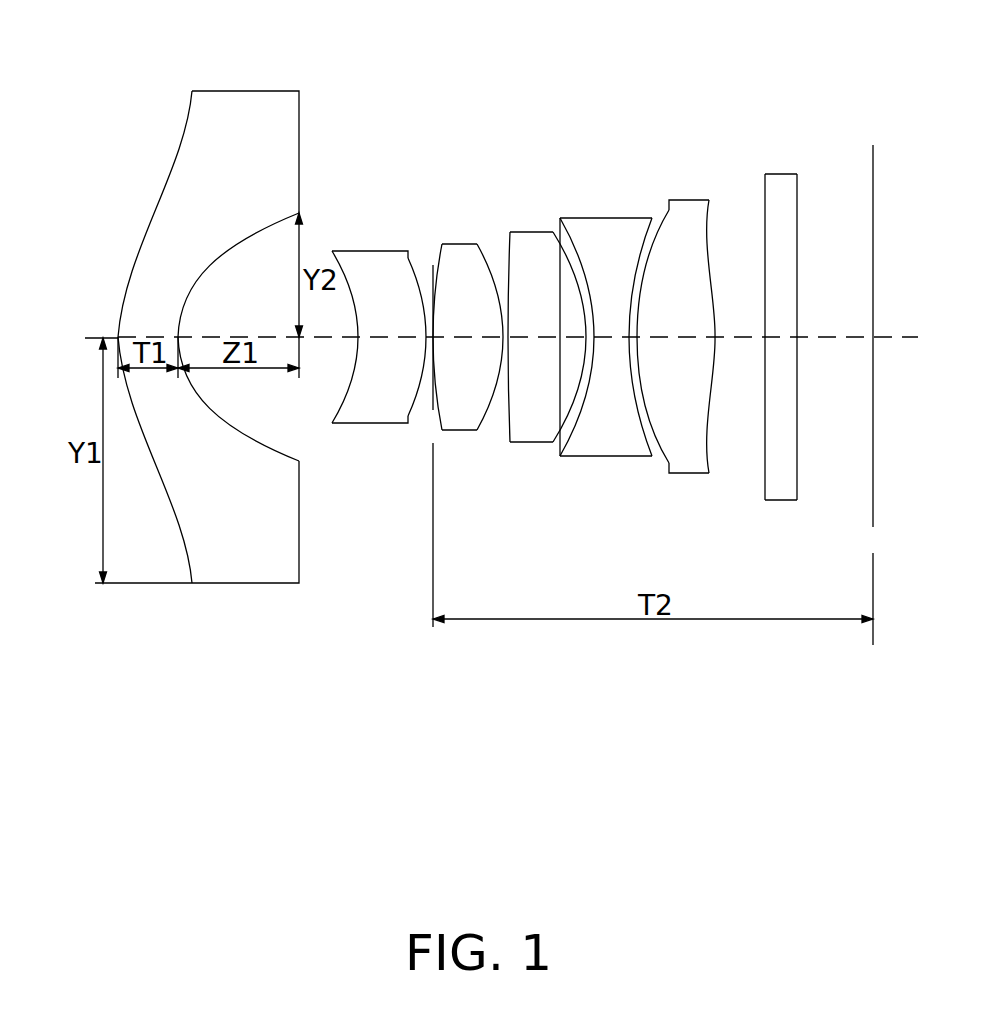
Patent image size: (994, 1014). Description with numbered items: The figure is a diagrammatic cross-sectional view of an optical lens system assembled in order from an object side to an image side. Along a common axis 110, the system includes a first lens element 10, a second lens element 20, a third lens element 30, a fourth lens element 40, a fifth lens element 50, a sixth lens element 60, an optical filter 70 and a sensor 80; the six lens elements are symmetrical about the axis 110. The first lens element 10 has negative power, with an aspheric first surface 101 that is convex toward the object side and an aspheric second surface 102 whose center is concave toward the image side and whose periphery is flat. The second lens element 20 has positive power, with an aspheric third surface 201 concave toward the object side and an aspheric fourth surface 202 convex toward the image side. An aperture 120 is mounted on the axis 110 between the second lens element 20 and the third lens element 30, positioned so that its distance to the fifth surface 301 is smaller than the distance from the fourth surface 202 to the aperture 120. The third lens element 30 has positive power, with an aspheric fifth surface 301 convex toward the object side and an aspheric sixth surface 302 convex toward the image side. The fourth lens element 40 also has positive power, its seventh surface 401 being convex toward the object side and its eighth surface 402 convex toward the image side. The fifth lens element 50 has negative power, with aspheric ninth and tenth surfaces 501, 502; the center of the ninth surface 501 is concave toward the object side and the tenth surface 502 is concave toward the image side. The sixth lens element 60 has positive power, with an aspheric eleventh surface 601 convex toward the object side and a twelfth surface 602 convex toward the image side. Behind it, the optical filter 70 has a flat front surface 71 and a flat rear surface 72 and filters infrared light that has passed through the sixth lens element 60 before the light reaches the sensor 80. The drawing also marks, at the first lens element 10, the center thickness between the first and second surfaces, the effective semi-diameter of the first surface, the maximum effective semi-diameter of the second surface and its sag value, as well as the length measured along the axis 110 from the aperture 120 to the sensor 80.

The first lens element 10 is at (212, 307).
The first surface 101 is at (160, 198).
The second surface 102 is at (268, 437).
The axis 110 is at (97, 337).
The aperture 120 is at (433, 265).
The second lens element 20 is at (379, 360).
The third surface 201 is at (347, 278).
The fourth surface 202 is at (410, 410).
The third lens element 30 is at (484, 349).
The fifth surface 301 is at (453, 248).
The sixth surface 302 is at (485, 418).
The fourth lens element 40 is at (526, 345).
The seventh surface 401 is at (510, 250).
The eighth surface 402 is at (563, 417).
The fifth lens element 50 is at (610, 332).
The ninth surface 501 is at (575, 252).
The tenth surface 502 is at (643, 438).
The sixth lens element 60 is at (700, 339).
The eleventh surface 601 is at (665, 223).
The twelfth surface 602 is at (705, 435).
The optical filter 70 is at (784, 341).
The front surface 71 is at (763, 192).
The rear surface 72 is at (798, 190).
The sensor 80 is at (873, 492).